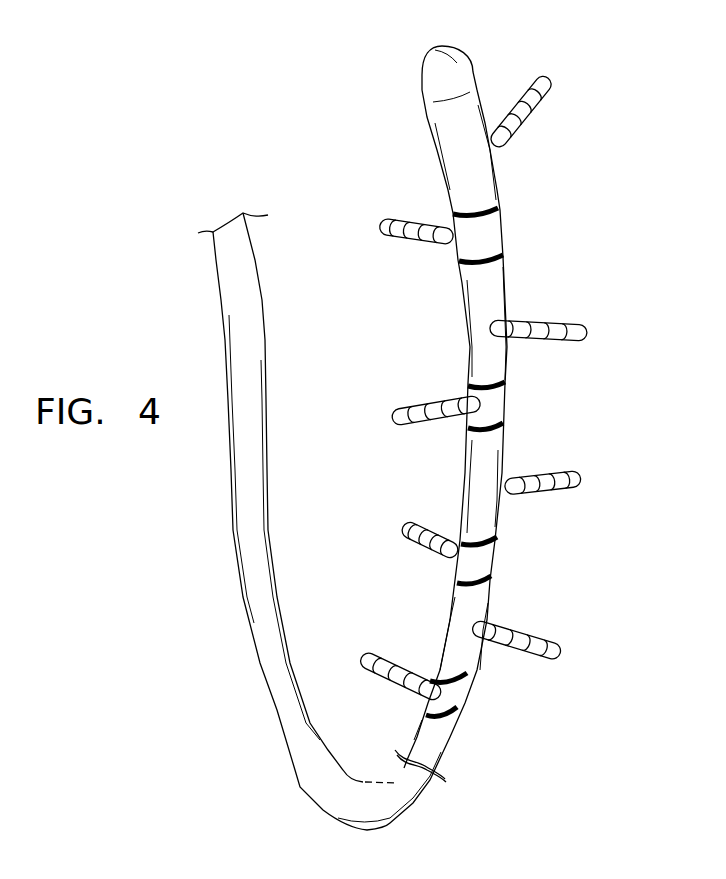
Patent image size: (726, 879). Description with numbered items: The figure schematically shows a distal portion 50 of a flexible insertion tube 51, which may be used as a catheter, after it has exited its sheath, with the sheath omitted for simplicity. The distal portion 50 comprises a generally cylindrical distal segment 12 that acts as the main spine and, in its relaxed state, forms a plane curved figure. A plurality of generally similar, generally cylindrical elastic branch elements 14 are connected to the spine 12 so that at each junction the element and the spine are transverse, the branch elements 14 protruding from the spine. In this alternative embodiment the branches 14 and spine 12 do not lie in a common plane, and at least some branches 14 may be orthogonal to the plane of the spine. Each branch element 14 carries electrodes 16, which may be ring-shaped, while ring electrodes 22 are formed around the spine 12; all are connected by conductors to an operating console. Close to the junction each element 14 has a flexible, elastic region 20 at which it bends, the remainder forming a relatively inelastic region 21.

The distal segment 12 is at (437, 155).
The elastic branch element 14 is at (382, 227).
The electrode 16 is at (500, 128).
The region 20 is at (503, 143).
The inelastic region 21 is at (531, 107).
The ring electrode 22 is at (502, 254).
The distal portion 50 is at (630, 79).
The flexible insertion tube 51 is at (345, 770).